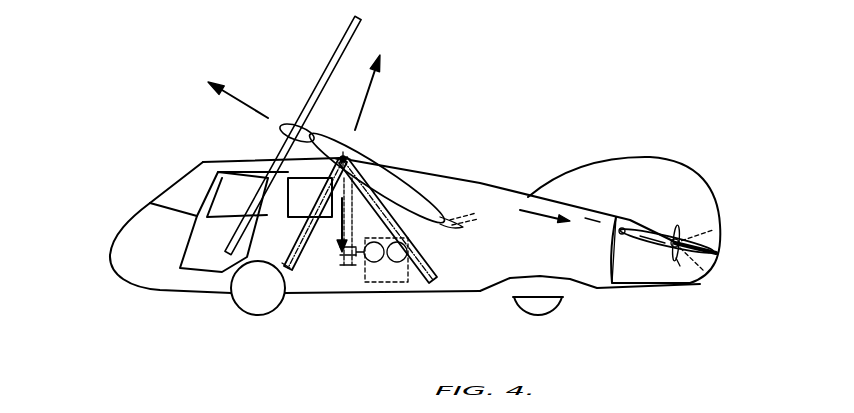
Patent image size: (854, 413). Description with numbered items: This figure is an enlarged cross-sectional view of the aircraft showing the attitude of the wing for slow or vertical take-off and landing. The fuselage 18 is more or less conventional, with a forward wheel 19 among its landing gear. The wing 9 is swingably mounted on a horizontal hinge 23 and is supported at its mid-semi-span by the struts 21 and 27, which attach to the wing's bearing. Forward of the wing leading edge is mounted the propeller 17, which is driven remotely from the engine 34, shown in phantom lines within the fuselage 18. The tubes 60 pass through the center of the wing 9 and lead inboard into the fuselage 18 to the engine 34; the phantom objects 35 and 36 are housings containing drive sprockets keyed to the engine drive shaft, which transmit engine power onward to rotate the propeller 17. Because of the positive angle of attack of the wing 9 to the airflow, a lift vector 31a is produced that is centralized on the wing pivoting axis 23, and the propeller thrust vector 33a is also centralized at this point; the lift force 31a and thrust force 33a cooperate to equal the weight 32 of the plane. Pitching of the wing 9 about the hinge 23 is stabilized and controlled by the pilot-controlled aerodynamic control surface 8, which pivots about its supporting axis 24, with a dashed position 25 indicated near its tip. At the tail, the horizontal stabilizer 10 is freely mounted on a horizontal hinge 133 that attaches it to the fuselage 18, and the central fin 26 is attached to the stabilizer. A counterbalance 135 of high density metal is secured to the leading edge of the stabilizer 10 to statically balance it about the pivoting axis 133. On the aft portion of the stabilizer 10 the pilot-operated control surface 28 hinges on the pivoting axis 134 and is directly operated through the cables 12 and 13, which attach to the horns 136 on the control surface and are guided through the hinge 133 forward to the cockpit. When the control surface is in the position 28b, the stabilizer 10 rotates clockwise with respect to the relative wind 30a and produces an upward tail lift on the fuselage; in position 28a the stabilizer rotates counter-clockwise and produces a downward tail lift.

The aerodynamic control surface 8 is at (450, 232).
The wing 9 is at (373, 172).
The horizontal stabilizer 10 is at (624, 230).
The cable 12 is at (676, 225).
The cable 13 is at (660, 250).
The propeller 17 is at (340, 42).
The fuselage 18 is at (170, 283).
The wheel 19 is at (252, 310).
The strut 21 is at (303, 270).
The horizontal hinge 23 is at (350, 153).
The supporting axis 24 is at (448, 215).
The blade extension 25 is at (466, 217).
The central fin 26 is at (670, 172).
The strut 27 is at (420, 278).
The control surface 28 is at (718, 253).
The control surface position 28a is at (702, 270).
The control surface position 28b is at (715, 230).
The relative wind 30a is at (522, 213).
The lift vector 31a is at (365, 100).
The weight 32 is at (340, 225).
The propeller thrust vector 33a is at (240, 98).
The engine 34 is at (377, 273).
The housing 35 is at (347, 270).
The housing 36 is at (353, 262).
The tube 60 is at (352, 210).
The horizontal hinge 133 is at (618, 280).
The pivoting axis 134 is at (680, 264).
The counterbalance 135 is at (587, 223).
The horn 136 is at (690, 230).